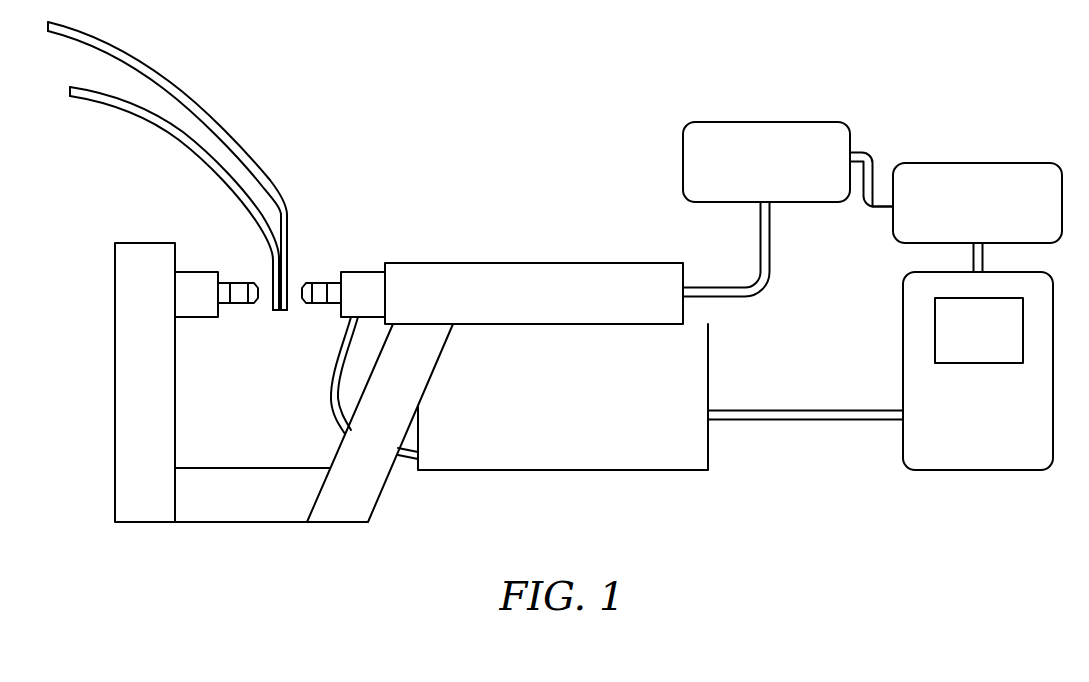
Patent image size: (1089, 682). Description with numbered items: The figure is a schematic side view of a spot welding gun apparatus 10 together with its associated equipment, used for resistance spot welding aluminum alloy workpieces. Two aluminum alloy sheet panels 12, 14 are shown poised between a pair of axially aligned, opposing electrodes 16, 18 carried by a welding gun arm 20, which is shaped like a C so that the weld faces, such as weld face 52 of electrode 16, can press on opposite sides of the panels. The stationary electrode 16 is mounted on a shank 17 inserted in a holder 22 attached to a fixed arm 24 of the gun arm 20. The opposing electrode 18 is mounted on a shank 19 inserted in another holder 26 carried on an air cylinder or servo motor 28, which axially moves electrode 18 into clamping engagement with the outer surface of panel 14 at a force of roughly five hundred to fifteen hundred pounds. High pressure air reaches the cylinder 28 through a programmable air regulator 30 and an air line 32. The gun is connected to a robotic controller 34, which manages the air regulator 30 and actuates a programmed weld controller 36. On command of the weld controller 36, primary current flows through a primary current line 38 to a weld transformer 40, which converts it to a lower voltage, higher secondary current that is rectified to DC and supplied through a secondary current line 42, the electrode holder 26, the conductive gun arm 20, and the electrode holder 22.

The spot welding gun apparatus 10 is at (496, 197).
The aluminum alloy sheet panel 12 is at (140, 115).
The aluminum alloy sheet panel 14 is at (183, 76).
The electrode 16 is at (247, 322).
The shank 17 is at (228, 283).
The electrode 18 is at (309, 264).
The shank 19 is at (326, 282).
The welding gun arm 20 is at (247, 503).
The holder 22 is at (190, 295).
The fixed arm 24 is at (127, 366).
The holder 26 is at (363, 272).
The air cylinder or servo motor 28 is at (545, 290).
The programmable air regulator 30 is at (770, 135).
The air line 32 is at (757, 288).
The robotic controller 34 is at (972, 178).
The weld controller 36 is at (963, 346).
The primary current line 38 is at (778, 416).
The weld transformer 40 is at (570, 450).
The secondary current line 42 is at (325, 397).
The weld face 52 is at (258, 305).